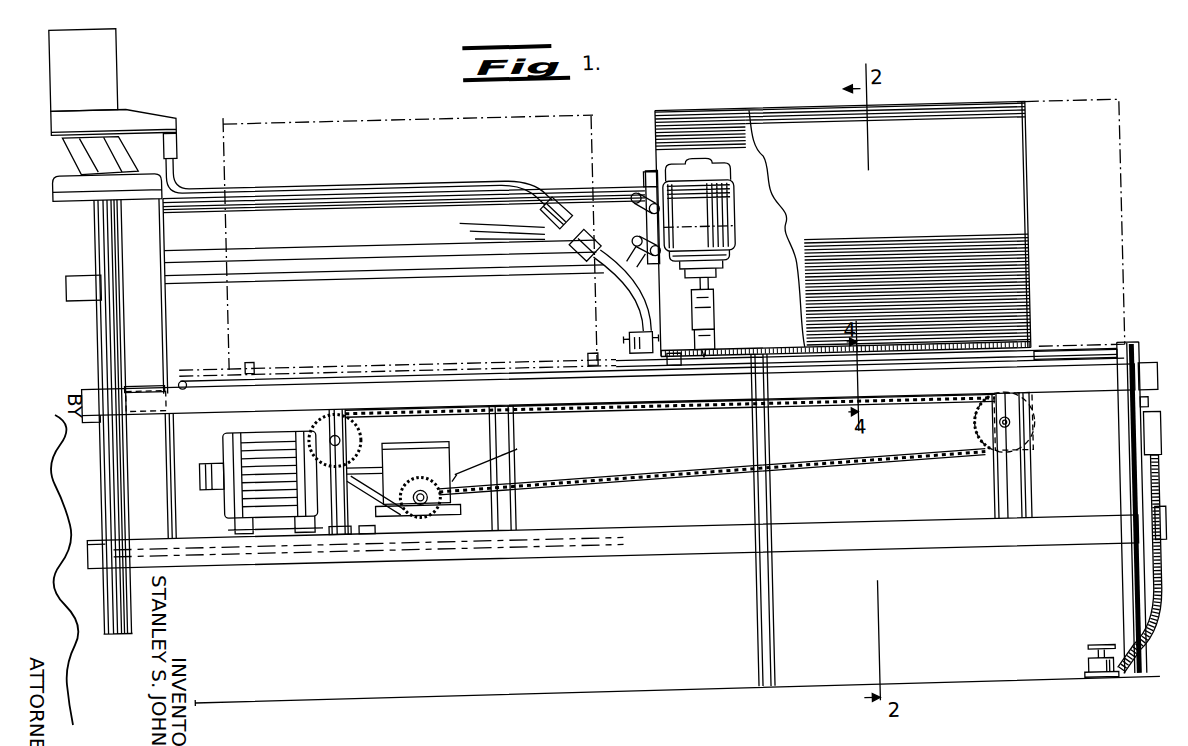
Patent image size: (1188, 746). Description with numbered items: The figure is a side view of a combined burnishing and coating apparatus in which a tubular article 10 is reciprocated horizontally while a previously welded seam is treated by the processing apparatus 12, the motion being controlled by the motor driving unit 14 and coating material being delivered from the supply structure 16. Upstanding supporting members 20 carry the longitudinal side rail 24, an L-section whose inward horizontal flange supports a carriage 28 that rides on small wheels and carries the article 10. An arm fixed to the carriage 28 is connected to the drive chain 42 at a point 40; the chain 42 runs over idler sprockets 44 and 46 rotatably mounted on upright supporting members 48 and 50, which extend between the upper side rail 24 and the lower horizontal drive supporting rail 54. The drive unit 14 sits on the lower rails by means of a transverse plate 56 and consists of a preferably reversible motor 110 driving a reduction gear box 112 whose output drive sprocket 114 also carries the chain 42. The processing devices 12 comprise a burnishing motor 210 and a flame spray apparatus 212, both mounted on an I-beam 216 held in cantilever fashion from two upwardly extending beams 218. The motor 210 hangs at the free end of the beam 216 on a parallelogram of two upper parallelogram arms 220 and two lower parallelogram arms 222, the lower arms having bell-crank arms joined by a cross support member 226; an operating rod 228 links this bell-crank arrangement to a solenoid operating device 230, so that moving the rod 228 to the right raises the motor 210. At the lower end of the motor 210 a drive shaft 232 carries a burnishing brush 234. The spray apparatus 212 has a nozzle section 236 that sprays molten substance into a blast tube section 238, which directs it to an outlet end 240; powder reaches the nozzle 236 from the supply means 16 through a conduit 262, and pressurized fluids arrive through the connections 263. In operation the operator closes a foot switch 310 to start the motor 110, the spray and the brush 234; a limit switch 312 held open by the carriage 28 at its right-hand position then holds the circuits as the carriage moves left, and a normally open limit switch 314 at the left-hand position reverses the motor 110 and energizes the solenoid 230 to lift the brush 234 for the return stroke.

The tubular article 10 is at (698, 113).
The processing apparatus 12 is at (636, 174).
The motor driving unit 14 is at (209, 446).
The supply structure 16 is at (146, 73).
The upstanding supporting members 20 is at (121, 471).
The longitudinal side rail 24 is at (1077, 404).
The carriage 28 is at (1052, 360).
The connection point 40 is at (858, 408).
The drive chain 42 is at (633, 470).
The idler sprocket 44 is at (980, 431).
The idler sprocket 46 is at (352, 443).
The upright supporting member 48 is at (1022, 480).
The upright supporting member 50 is at (335, 522).
The lower horizontal drive supporting rail 54 is at (575, 557).
The transverse plate 56 is at (364, 522).
The reversible motor 110 is at (219, 498).
The reduction gear box 112 is at (425, 443).
The output drive sprocket 114 is at (511, 449).
The burnishing motor 210 is at (739, 220).
The flame spray apparatus 212 is at (584, 214).
The I-beam 216 is at (352, 254).
The upwardly extending beams 218 is at (172, 305).
The upper parallelogram arms 220 is at (652, 181).
The lower parallelogram arms 222 is at (653, 266).
The cross support member 226 is at (633, 246).
The operating rod 228 is at (498, 274).
The solenoid operating device 230 is at (76, 289).
The drive shaft 232 is at (718, 286).
The burnishing brush 234 is at (713, 350).
The nozzle section 236 is at (562, 192).
The blast tube section 238 is at (616, 287).
The outlet end 240 is at (618, 343).
The conduit 262 is at (265, 178).
The fluid connections 263 is at (476, 212).
The foot switch 310 is at (1087, 665).
The limit switch 312 is at (1150, 375).
The limit switch 314 is at (136, 375).